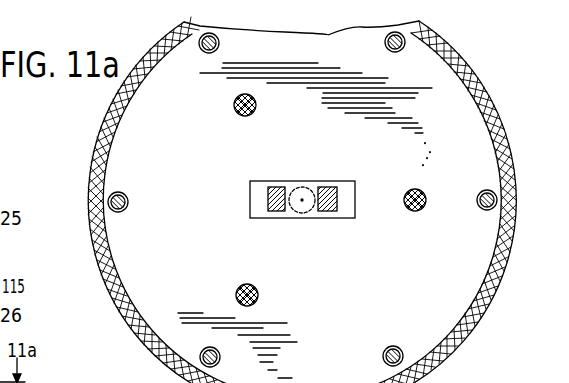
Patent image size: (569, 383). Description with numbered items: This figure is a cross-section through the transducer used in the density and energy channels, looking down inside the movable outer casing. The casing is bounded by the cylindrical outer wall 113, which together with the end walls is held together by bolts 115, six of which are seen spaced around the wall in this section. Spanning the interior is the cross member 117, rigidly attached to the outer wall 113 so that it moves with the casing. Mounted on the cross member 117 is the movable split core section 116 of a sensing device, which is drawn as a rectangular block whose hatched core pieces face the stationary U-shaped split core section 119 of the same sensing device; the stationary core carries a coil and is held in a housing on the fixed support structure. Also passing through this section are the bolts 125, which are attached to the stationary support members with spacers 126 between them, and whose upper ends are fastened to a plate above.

The cylindrical outer wall 113 is at (113, 127).
The bolts 115 is at (202, 51).
The movable split core section 116 is at (255, 183).
The cross member 117 is at (387, 285).
The U-shaped split core section 119 is at (326, 188).
The bolts 125 is at (256, 104).
The spacers 126 is at (242, 115).